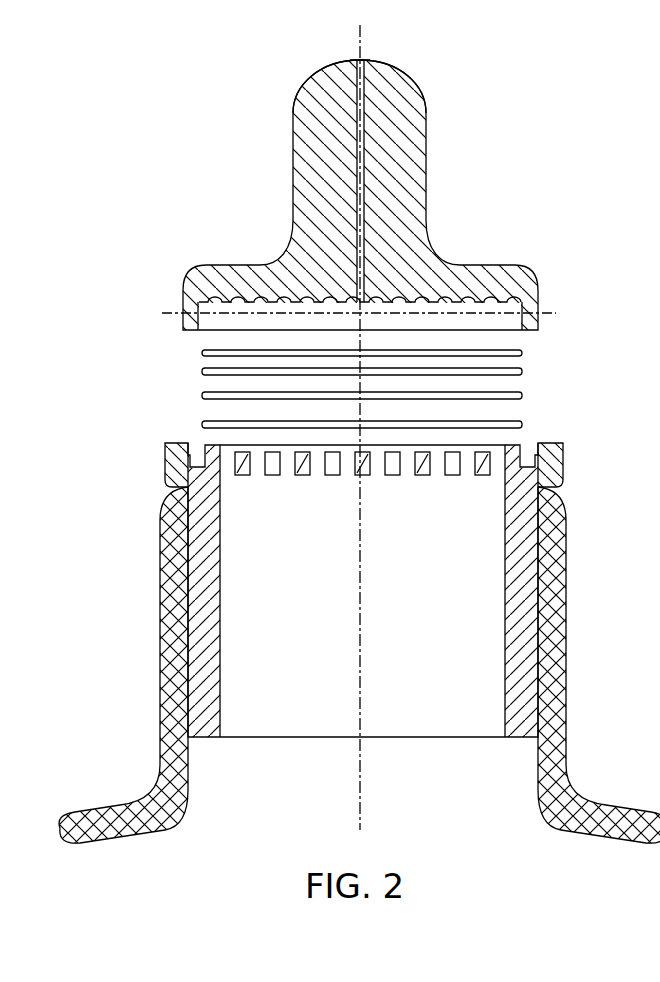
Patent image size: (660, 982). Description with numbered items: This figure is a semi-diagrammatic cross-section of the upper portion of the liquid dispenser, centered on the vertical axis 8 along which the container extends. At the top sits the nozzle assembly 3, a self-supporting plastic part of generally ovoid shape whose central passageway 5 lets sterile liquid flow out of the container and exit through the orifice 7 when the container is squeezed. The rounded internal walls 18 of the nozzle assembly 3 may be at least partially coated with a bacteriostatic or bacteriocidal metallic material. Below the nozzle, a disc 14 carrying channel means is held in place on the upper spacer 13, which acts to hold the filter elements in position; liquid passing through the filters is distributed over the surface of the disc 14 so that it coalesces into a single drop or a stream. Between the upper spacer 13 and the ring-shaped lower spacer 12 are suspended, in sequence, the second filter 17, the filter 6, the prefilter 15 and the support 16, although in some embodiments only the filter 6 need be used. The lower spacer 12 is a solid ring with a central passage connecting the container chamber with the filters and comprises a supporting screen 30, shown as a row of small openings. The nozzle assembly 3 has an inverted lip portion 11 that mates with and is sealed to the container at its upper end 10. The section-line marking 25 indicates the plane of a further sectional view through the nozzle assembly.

The nozzle assembly 3 is at (291, 181).
The passageway 5 is at (367, 176).
The filter 6 is at (526, 372).
The orifice 7 is at (372, 59).
The vertical axis 8 is at (356, 37).
The upper end 10 is at (158, 595).
The inverted lip portion 11 is at (164, 464).
The lower spacer 12 is at (213, 648).
The upper spacer 13 is at (417, 146).
The disc 14 is at (473, 299).
The prefilter 15 is at (526, 396).
The support 16 is at (526, 425).
The second filter 17 is at (526, 353).
The internal walls 18 is at (366, 94).
The section line 25 is at (162, 312).
The supporting screen 30 is at (468, 448).